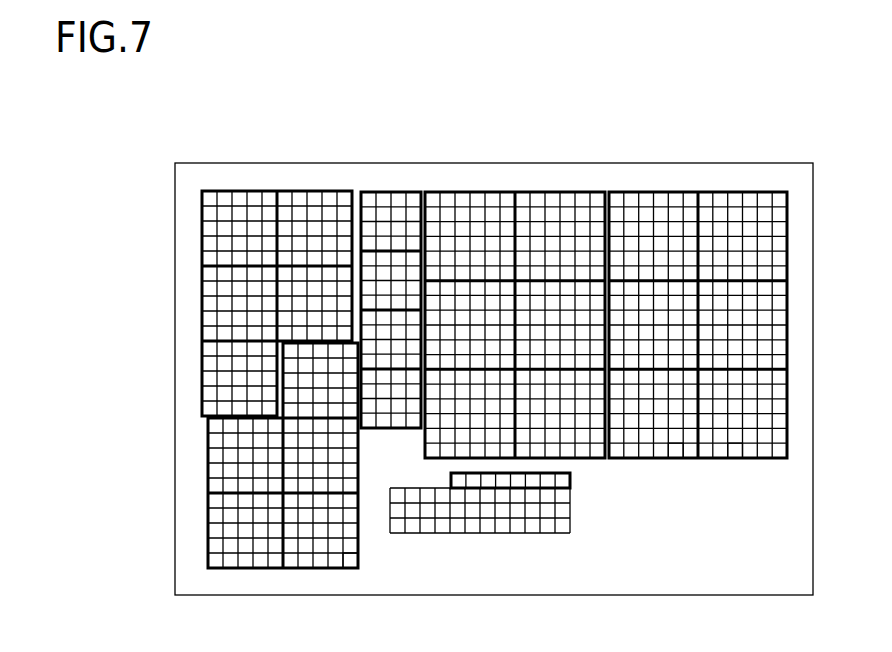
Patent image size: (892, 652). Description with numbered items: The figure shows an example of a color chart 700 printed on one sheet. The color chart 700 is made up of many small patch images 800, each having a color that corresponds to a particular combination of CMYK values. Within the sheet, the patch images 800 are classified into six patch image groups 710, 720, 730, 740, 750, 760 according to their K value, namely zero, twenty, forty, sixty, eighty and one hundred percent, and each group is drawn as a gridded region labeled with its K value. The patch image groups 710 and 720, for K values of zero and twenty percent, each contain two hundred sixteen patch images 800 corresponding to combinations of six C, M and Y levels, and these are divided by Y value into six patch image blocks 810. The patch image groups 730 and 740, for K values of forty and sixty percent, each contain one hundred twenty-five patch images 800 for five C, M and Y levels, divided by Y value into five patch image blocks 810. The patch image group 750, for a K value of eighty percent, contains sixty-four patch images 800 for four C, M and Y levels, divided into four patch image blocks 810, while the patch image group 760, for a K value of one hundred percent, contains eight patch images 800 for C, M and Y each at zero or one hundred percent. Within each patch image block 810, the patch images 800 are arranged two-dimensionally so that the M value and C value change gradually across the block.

The color chart 700 is at (213, 132).
The patch image group 710 is at (567, 191).
The patch image group 720 is at (753, 191).
The patch image group 730 is at (203, 241).
The patch image group 740 is at (208, 513).
The patch image group 750 is at (412, 191).
The patch image group 760 is at (572, 490).
The patch image 800 is at (350, 557).
The patch image block 810 is at (739, 460).